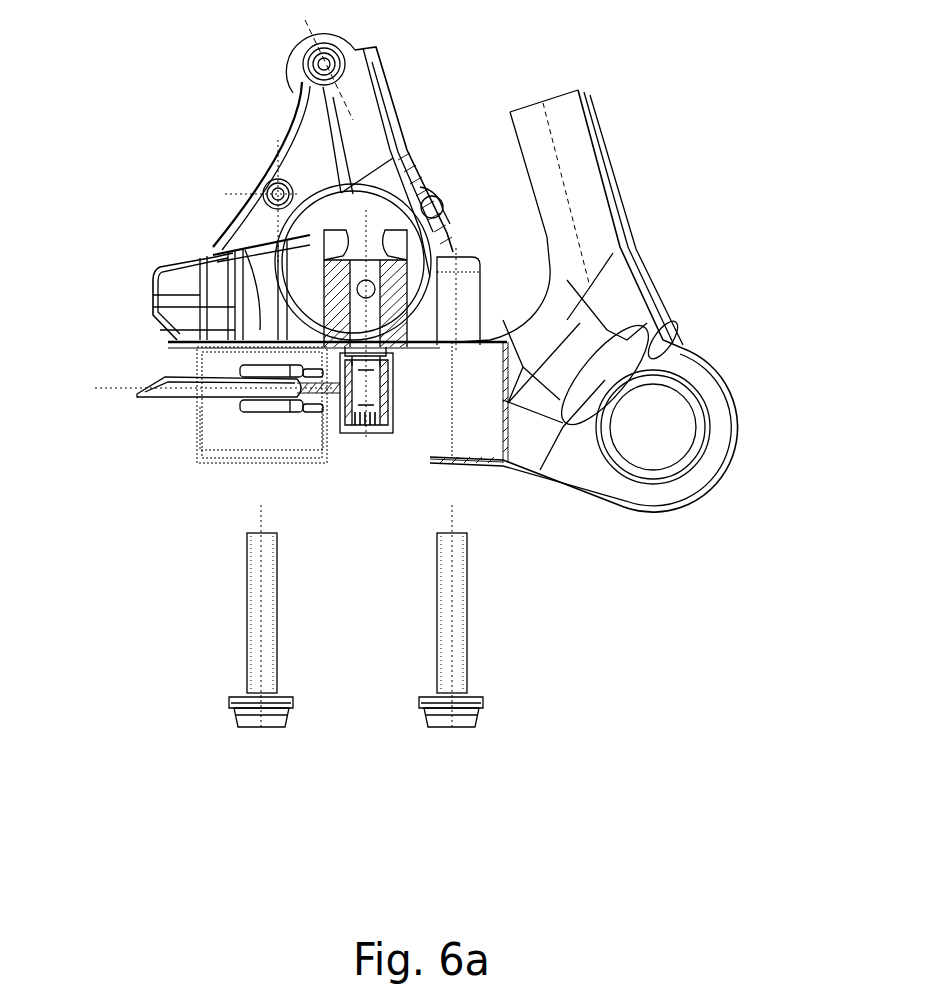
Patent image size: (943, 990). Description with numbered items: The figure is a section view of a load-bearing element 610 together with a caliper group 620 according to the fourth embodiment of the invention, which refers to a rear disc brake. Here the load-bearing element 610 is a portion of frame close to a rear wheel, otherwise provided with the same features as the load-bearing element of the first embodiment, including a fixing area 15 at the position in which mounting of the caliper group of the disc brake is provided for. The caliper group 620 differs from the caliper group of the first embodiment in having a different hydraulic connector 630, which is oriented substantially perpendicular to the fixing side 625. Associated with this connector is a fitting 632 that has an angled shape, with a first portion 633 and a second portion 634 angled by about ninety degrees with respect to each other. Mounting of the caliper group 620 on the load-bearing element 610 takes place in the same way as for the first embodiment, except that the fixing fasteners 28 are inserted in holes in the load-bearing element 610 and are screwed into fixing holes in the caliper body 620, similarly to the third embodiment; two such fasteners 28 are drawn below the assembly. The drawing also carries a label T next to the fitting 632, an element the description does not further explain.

The fixing area 15 is at (235, 241).
The fixing fasteners 28 is at (260, 655).
The load-bearing element 610 is at (623, 273).
The caliper group 620 is at (222, 183).
The fixing side 625 is at (397, 373).
The hydraulic connector 630 is at (443, 257).
The fitting 632 is at (246, 423).
The first portion 633 is at (413, 345).
The second portion 634 is at (292, 390).
The tool T is at (160, 373).